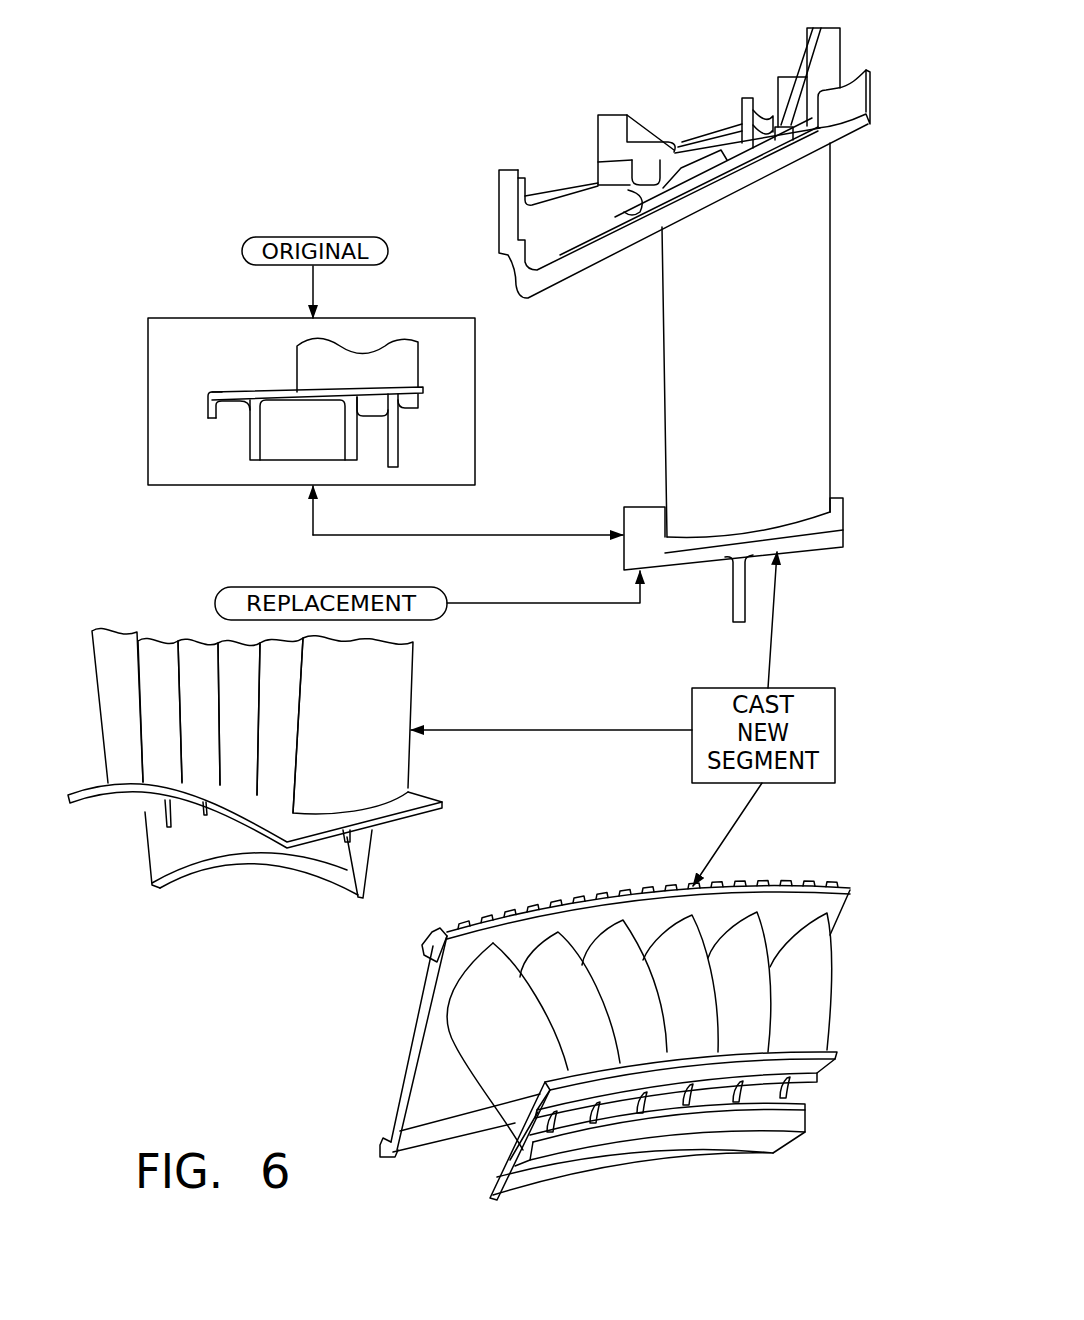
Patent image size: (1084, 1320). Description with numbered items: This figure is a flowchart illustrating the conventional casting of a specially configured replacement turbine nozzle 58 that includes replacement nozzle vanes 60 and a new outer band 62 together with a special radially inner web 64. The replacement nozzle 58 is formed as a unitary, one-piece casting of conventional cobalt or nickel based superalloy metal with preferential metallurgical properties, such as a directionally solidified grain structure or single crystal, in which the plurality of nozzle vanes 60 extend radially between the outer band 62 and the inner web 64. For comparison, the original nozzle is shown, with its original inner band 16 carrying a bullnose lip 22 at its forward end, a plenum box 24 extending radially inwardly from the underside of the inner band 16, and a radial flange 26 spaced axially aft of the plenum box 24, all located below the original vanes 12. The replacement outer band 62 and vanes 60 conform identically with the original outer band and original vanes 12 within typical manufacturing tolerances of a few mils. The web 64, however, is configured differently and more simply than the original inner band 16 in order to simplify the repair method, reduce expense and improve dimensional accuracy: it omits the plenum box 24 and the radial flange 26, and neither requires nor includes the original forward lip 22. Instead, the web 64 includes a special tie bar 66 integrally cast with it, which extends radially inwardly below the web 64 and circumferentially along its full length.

The vanes 12 is at (343, 381).
The inner band 16 is at (260, 392).
The bullnose lip 22 is at (207, 410).
The plenum box 24 is at (293, 447).
The radial flange 26 is at (399, 432).
The replacement turbine nozzle 58 is at (542, 591).
The nozzle vanes 60 is at (728, 386).
The outer band 62 is at (591, 258).
The web 64 is at (844, 520).
The tie bar 66 is at (733, 596).